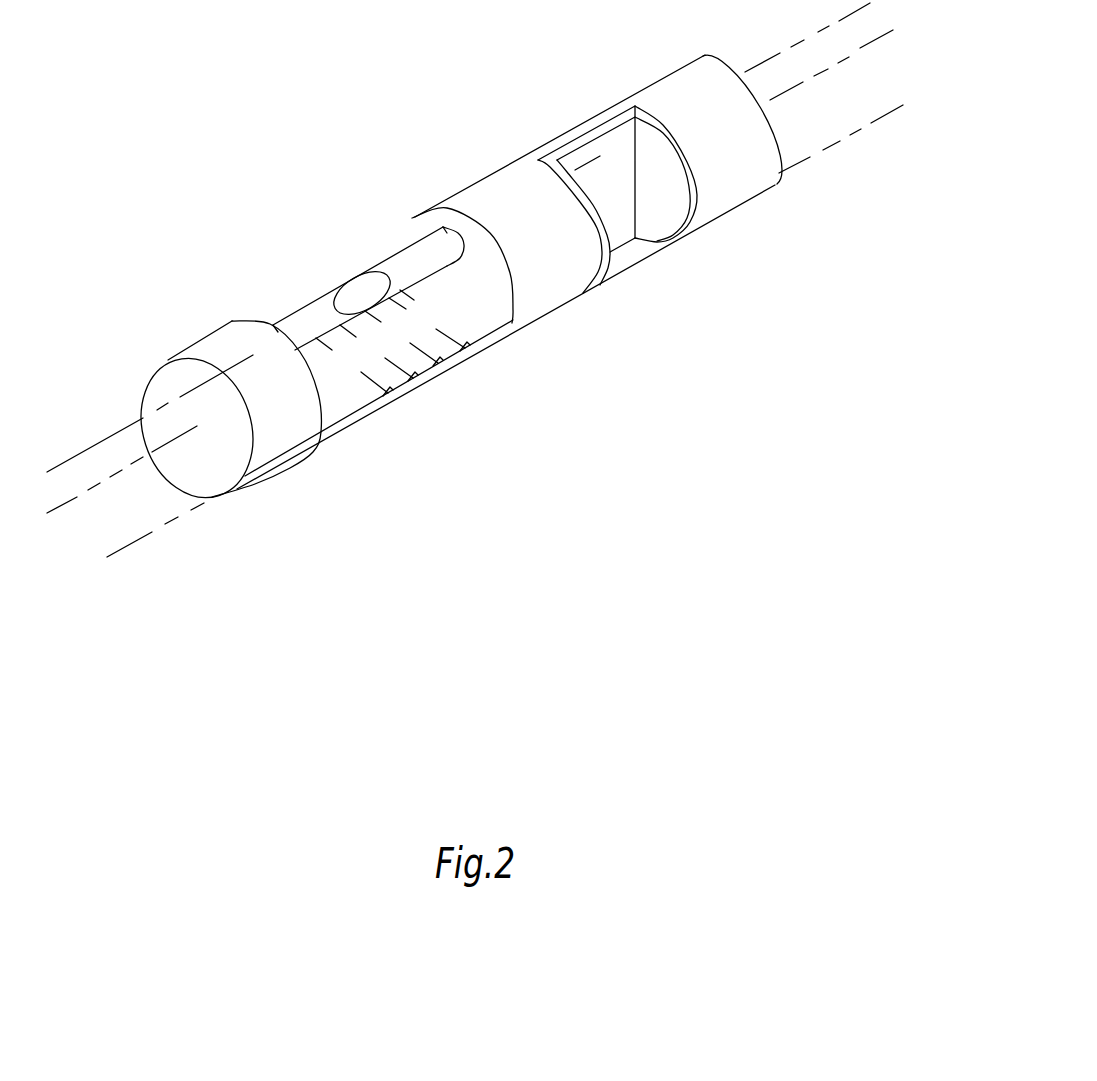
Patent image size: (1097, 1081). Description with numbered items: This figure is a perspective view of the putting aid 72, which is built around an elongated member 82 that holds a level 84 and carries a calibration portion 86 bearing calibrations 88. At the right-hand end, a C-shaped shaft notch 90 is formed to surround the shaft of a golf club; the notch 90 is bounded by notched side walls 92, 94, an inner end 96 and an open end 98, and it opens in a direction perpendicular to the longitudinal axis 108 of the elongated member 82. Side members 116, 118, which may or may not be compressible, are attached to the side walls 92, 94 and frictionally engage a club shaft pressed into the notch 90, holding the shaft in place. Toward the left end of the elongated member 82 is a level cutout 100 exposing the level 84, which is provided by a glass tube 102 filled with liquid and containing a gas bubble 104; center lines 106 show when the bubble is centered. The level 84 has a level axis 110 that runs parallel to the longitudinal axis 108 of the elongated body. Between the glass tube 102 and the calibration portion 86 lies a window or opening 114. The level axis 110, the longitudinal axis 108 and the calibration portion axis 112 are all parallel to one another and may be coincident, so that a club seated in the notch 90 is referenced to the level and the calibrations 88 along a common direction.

The putting aid 72 is at (172, 330).
The elongated member 82 is at (153, 365).
The level 84 is at (258, 307).
The calibration portion 86 is at (385, 405).
The calibrations 88 is at (413, 380).
The shaft notch 90 is at (612, 135).
The notched side wall 92 is at (692, 163).
The notched side wall 94 is at (599, 232).
The inner end 96 is at (592, 168).
The open end 98 is at (632, 247).
The level cutout 100 is at (422, 217).
The glass tube 102 is at (401, 248).
The gas bubble 104 is at (354, 286).
The center lines 106 is at (316, 300).
The longitudinal axis 108 is at (76, 498).
The level axis 110 is at (118, 430).
The calibration portion axis 112 is at (138, 541).
The window 114 is at (420, 297).
The side member 116 is at (695, 221).
The side member 118 is at (604, 272).